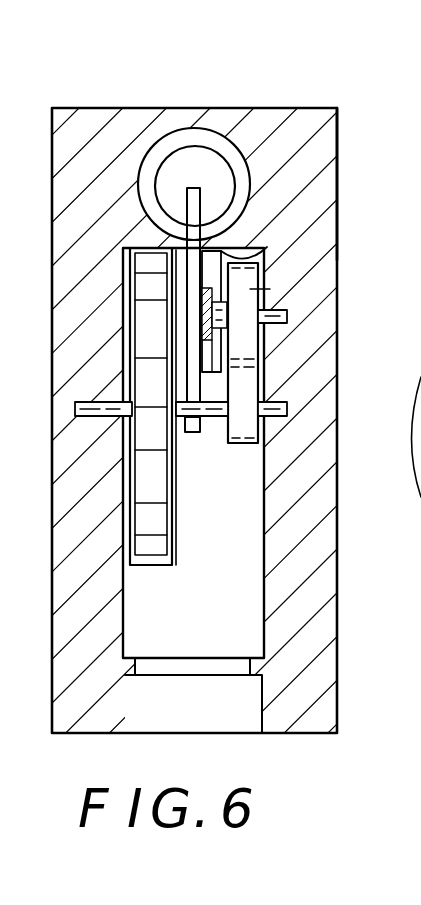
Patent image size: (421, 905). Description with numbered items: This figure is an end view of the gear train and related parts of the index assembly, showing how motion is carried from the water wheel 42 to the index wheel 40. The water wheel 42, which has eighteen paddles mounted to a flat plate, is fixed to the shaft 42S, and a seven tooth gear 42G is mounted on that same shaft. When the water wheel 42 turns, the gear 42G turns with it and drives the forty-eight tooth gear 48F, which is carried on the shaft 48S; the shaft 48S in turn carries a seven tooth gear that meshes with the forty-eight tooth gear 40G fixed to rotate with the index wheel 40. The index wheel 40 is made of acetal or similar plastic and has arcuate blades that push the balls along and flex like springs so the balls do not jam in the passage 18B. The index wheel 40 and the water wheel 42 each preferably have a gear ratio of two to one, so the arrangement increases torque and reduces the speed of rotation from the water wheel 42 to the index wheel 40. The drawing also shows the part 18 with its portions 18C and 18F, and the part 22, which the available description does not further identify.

The housing 18 is at (338, 530).
The passage 18B is at (212, 131).
The cavity in housing 18C is at (263, 561).
The front face of housing 18F is at (338, 140).
The shaft opening 22 is at (193, 147).
The index wheel 40 is at (192, 186).
The 48 teeth gear 40G is at (278, 246).
The water wheel 42 is at (153, 565).
The 7 teeth gear 42G is at (243, 390).
The shaft 42S is at (287, 408).
The 48 teeth gear 48F is at (252, 290).
The shaft 48S is at (211, 418).